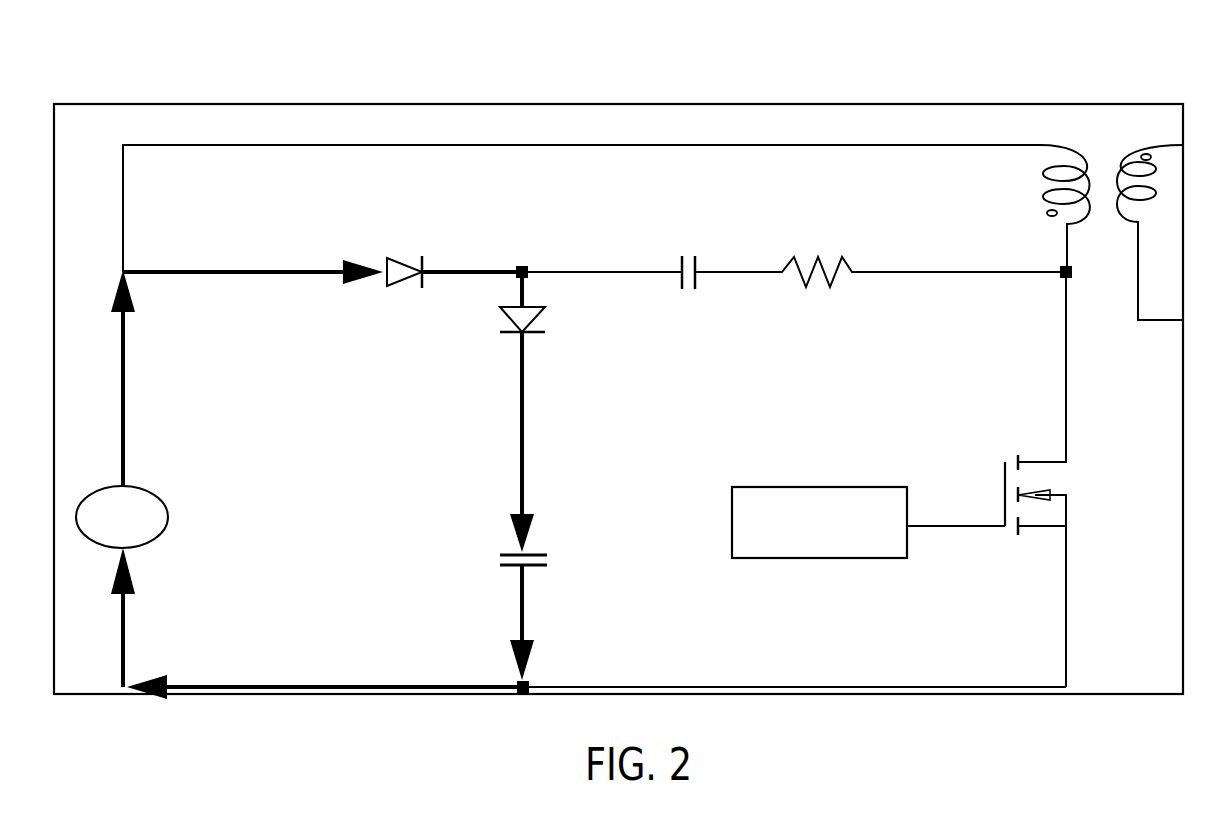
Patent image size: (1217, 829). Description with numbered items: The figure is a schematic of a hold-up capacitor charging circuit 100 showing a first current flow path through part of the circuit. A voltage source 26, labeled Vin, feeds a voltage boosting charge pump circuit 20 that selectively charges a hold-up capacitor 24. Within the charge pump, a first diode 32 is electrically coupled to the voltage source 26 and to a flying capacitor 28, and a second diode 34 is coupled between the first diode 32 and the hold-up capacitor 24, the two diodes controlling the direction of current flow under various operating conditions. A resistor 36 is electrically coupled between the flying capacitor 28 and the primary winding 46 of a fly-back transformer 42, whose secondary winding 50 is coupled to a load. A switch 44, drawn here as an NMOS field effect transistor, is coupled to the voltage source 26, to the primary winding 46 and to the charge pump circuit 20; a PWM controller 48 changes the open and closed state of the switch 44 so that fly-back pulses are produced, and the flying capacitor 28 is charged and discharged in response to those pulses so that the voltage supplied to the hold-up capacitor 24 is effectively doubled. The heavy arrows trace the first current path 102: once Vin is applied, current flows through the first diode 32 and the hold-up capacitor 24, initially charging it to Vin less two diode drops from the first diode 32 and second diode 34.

The hold-up capacitor charging circuit 100 is at (512, 90).
The transformer 42 is at (1049, 180).
The voltage boosting charge pump circuit 20 is at (491, 238).
The first diode 32 is at (390, 233).
The second diode 34 is at (555, 352).
The flying capacitor 28 is at (672, 233).
The resistor 36 is at (795, 233).
The primary winding 46 is at (1047, 195).
The secondary winding 50 is at (1150, 198).
The hold-up capacitor 24 is at (477, 538).
The voltage source 26 is at (102, 487).
The first current path 102 is at (232, 690).
The controller 48 is at (770, 486).
The switch 44 is at (1002, 484).